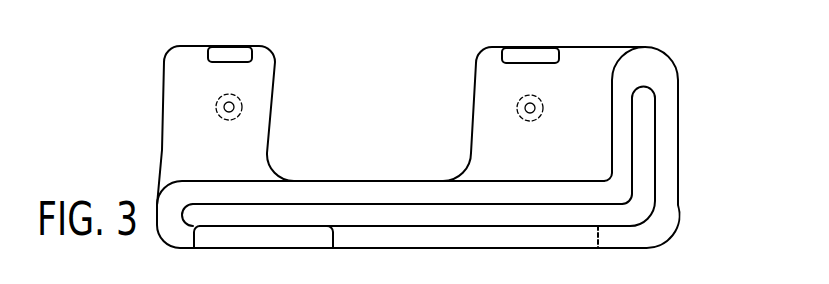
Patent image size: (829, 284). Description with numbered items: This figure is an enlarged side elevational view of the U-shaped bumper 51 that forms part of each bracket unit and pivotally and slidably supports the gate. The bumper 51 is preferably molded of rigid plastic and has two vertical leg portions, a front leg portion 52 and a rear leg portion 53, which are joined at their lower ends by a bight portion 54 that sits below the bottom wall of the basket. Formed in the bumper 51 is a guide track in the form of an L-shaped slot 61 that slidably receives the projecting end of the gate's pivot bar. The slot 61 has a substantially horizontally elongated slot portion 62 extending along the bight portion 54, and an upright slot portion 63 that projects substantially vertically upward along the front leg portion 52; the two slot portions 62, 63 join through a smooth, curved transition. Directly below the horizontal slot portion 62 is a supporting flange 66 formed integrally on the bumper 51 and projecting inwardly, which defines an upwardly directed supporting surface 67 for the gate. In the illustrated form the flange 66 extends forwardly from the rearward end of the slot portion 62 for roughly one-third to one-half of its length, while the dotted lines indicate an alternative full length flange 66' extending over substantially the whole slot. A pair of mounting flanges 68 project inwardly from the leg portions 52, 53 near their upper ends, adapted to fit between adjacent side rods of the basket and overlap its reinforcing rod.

The U-shaped bumper 51 is at (136, 72).
The front leg portion 52 is at (587, 63).
The leg portion 53 is at (263, 67).
The bight portion 54 is at (392, 188).
The L-shaped slot 61 is at (482, 215).
The horizontally elongated slot portion 62 is at (285, 213).
The upright slot portion 63 is at (640, 135).
The supporting flange 66 is at (337, 254).
The full length flange 66' is at (570, 254).
The supporting surface 67 is at (229, 217).
The mounting flanges 68 is at (233, 50).